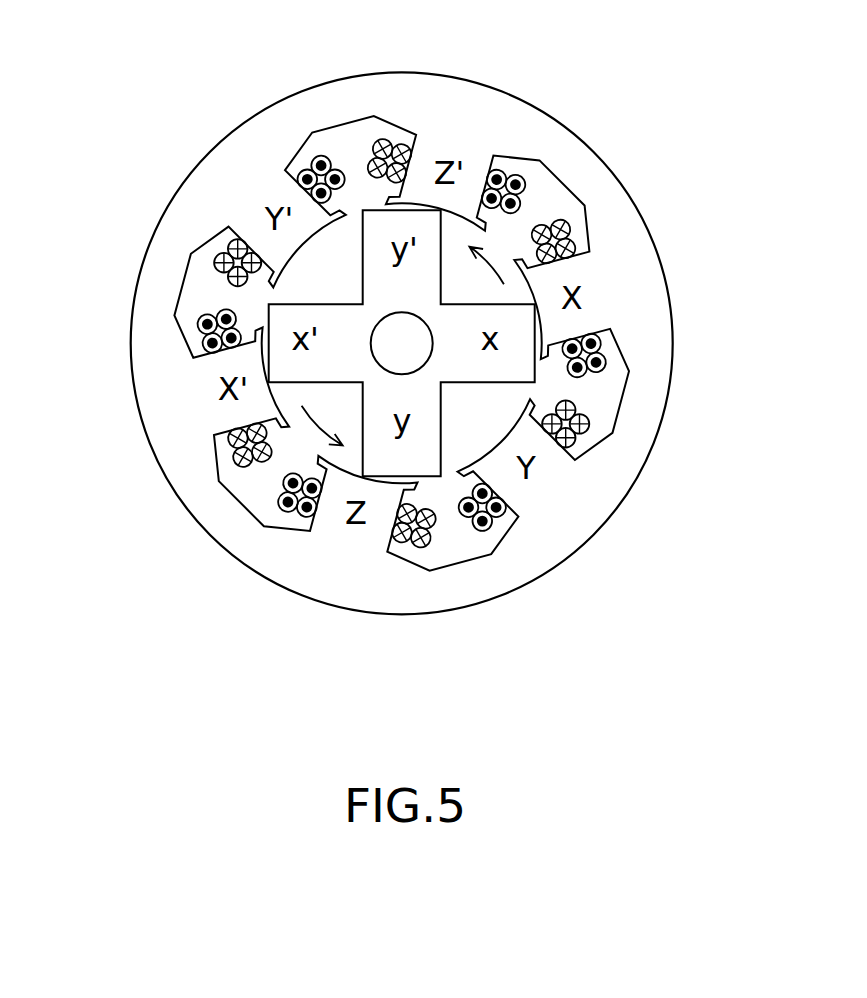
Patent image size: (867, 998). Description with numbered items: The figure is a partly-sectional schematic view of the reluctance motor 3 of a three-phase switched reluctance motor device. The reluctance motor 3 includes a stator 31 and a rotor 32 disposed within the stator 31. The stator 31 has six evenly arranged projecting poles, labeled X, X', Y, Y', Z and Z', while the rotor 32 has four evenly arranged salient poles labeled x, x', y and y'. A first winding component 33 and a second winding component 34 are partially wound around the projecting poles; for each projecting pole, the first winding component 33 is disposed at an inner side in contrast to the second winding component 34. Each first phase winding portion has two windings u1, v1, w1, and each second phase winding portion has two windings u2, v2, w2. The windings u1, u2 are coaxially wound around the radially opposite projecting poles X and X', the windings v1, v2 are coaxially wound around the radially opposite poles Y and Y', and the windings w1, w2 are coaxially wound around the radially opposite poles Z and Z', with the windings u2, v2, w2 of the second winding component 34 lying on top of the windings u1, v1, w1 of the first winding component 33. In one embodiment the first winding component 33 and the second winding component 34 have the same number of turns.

The reluctance motor 3 is at (693, 261).
The stator 31 is at (645, 408).
The rotor 32 is at (510, 362).
The first winding component 33 is at (408, 92).
The second winding component 34 is at (383, 137).
The winding u1 is at (203, 343).
The winding u2 is at (198, 325).
The winding v1 is at (505, 516).
The winding v2 is at (485, 531).
The winding w1 is at (303, 515).
The winding w2 is at (280, 502).